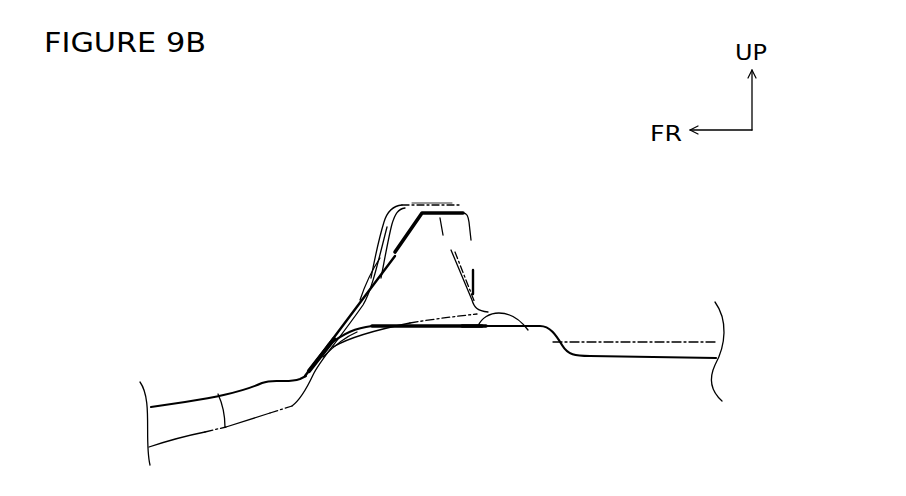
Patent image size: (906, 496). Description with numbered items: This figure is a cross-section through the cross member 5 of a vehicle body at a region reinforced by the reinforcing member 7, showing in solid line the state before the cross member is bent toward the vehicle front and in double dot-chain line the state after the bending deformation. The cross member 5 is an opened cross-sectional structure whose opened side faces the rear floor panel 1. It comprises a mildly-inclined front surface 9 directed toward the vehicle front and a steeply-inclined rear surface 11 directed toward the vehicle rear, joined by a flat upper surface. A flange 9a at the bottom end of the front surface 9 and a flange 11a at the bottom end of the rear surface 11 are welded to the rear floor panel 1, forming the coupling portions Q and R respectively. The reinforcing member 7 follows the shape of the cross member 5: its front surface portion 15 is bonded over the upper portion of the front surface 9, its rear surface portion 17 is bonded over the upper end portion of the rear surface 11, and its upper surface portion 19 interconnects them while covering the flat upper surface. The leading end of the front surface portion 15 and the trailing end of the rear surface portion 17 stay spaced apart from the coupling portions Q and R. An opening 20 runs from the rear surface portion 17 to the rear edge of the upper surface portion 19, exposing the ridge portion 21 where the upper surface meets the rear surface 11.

The rear floor panel 1 is at (179, 401).
The cross member 5 is at (392, 259).
The reinforcing member 7 is at (450, 205).
The front surface 9 is at (356, 266).
The flange 9a is at (334, 346).
The rear surface 11 is at (472, 301).
The flange 11a is at (480, 314).
The front surface portion 15 is at (370, 249).
The rear surface portion 17 is at (468, 283).
The upper surface portion 19 is at (413, 201).
The opening 20 is at (453, 256).
The ridge portion 21 is at (478, 217).
The coupling portion Q is at (338, 350).
The coupling portion R is at (489, 333).